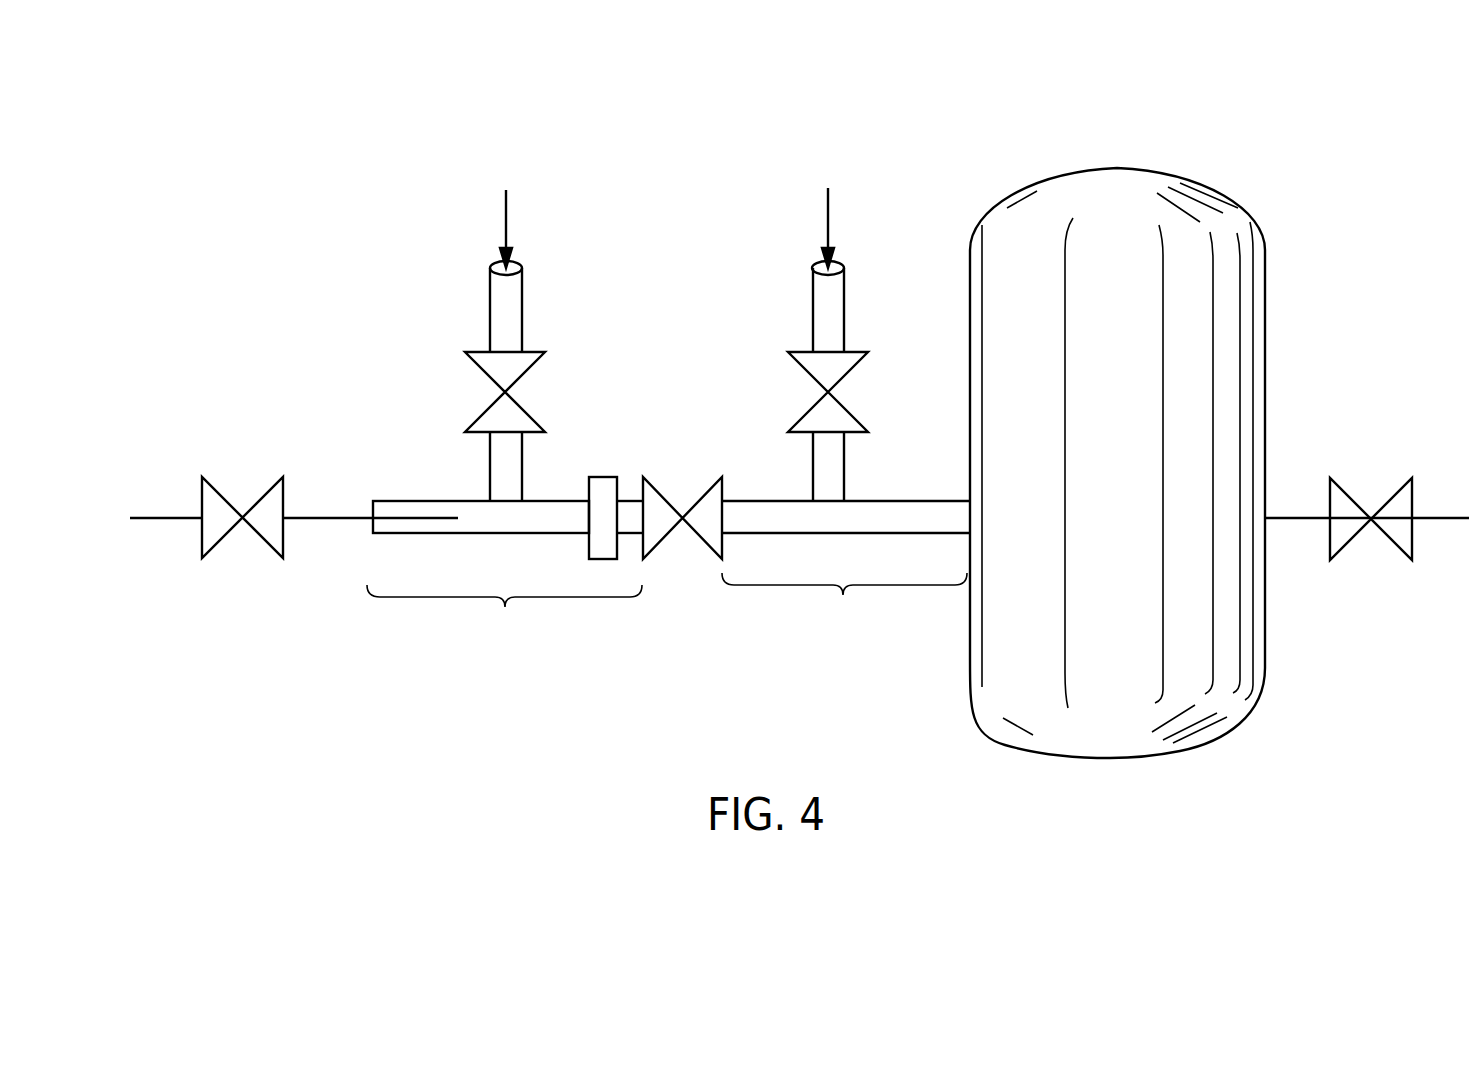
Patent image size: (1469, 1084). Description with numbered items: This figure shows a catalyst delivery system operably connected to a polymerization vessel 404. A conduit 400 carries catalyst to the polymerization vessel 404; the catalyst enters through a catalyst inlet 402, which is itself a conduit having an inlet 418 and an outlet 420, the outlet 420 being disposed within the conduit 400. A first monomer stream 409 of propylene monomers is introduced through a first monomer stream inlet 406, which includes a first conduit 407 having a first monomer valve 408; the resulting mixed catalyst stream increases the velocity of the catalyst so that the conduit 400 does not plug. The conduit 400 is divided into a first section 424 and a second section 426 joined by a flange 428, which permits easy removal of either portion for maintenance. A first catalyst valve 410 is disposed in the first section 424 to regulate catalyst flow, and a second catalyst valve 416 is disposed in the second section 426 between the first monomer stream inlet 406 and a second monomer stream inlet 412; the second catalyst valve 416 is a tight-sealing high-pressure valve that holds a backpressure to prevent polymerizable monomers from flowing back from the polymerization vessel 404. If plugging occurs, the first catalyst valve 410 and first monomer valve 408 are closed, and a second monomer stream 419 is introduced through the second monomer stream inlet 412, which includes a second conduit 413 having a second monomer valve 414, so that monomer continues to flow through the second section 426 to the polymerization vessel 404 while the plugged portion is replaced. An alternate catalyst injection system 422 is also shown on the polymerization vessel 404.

The conduit 400 is at (425, 500).
The catalyst inlet 402 is at (338, 516).
The polymerization vessel 404 is at (1265, 325).
The first monomer stream inlet 406 is at (503, 265).
The first conduit 407 is at (523, 312).
The first monomer valve 408 is at (503, 392).
The first monomer stream 409 is at (507, 217).
The first catalyst valve 410 is at (202, 535).
The second monomer stream inlet 412 is at (835, 265).
The second conduit 413 is at (844, 310).
The second monomer valve 414 is at (831, 392).
The second catalyst valve 416 is at (683, 520).
The inlet 418 is at (153, 517).
The second monomer stream 419 is at (828, 212).
The outlet 420 is at (450, 520).
The alternate catalyst injection system 422 is at (1393, 492).
The first section 424 is at (504, 614).
The second section 426 is at (845, 566).
The flange 428 is at (598, 477).